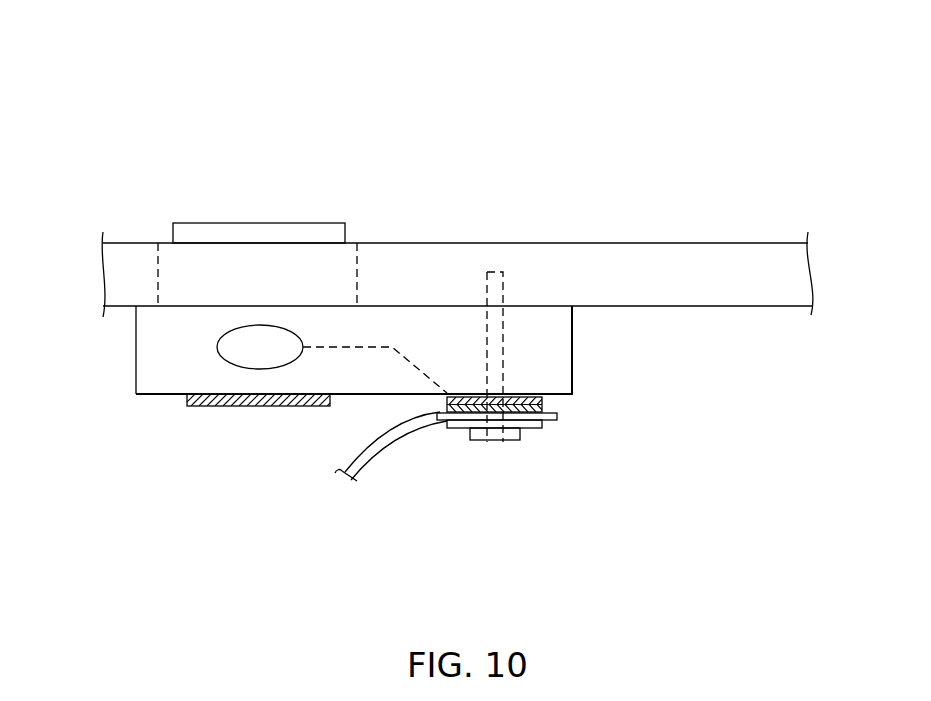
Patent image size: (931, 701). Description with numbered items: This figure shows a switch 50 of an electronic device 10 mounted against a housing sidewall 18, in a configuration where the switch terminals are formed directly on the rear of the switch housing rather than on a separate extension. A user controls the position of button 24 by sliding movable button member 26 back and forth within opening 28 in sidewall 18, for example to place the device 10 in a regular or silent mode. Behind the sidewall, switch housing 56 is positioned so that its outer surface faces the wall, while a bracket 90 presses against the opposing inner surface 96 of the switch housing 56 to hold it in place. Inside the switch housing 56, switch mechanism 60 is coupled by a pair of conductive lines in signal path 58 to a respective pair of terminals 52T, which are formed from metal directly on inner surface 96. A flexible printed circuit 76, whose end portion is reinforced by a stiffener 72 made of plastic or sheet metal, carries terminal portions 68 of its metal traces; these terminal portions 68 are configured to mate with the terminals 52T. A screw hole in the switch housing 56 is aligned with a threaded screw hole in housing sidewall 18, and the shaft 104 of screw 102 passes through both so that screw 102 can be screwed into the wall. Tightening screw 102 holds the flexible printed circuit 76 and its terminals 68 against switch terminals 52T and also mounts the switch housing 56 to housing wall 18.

The device 10 is at (716, 57).
The housing sidewall 18 is at (720, 253).
The button 24 is at (181, 192).
The movable button member 26 is at (317, 227).
The opening 28 is at (157, 258).
The switch 50 is at (103, 351).
The switch housing 56 is at (136, 380).
The signal path 58 is at (367, 343).
The switch mechanism 60 is at (217, 349).
The terminal portions 68 is at (550, 410).
The stiffener 72 is at (453, 428).
The flexible printed circuit 76 is at (363, 462).
The bracket 90 is at (215, 407).
The inner surface 96 is at (353, 396).
The screw 102 is at (500, 440).
The shaft 104 is at (505, 345).
The terminals 52T is at (543, 398).